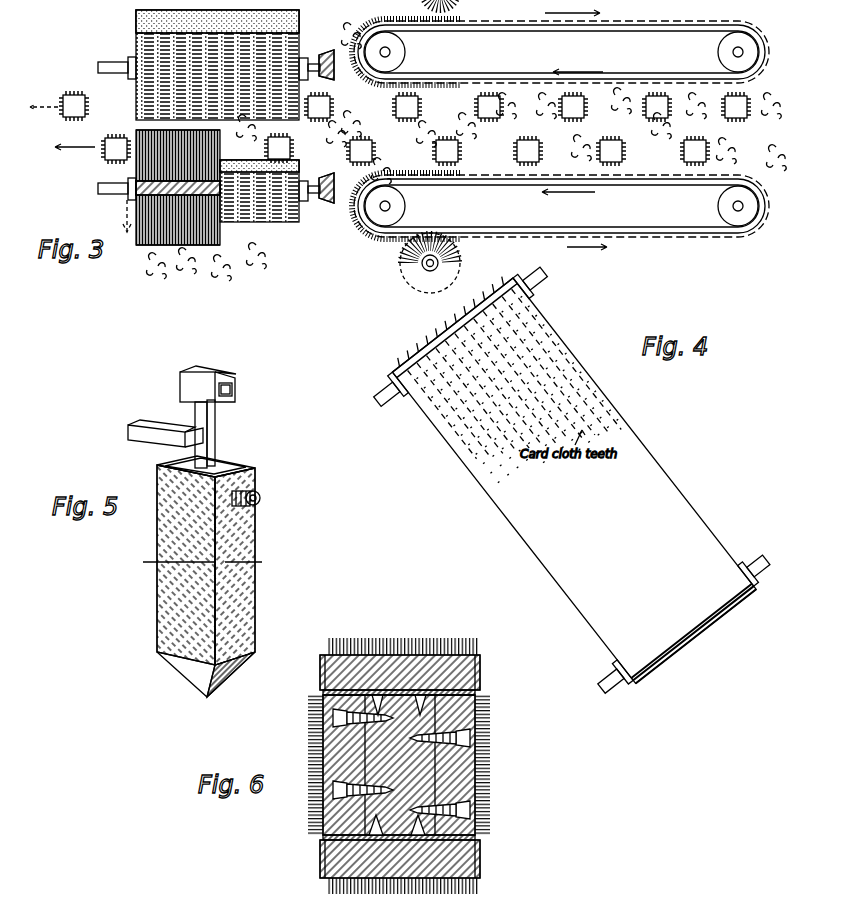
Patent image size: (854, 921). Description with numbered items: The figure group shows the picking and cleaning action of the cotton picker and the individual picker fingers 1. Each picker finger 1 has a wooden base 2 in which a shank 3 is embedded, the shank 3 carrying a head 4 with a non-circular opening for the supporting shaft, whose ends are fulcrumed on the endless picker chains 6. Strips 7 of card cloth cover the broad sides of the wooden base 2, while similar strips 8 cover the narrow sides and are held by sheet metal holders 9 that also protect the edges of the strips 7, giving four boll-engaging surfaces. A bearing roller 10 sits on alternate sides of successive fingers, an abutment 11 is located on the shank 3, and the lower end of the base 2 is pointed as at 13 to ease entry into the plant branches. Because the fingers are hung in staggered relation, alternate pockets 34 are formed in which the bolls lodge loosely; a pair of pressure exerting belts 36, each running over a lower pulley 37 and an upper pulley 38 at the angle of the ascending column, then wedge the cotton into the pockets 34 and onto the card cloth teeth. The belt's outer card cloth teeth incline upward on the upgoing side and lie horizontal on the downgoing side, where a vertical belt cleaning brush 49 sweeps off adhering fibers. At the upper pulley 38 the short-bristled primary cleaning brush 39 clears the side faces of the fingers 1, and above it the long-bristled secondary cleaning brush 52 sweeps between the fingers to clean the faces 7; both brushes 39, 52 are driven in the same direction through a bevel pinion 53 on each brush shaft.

In FIG. 3, the picker finger 1 is at (84, 115).
In FIG. 5, the picker finger 1 is at (240, 528).
In FIG. 6, the picker finger 1 is at (383, 689).
In FIG. 5, the wooden base 2 is at (224, 466).
In FIG. 6, the wooden base 2 is at (475, 780).
In FIG. 5, the shank 3 is at (216, 432).
In FIG. 5, the head 4 is at (214, 370).
In FIG. 5, the endless picker chains 6 is at (201, 564).
In FIG. 6, the card cloth strips 7 is at (480, 767).
In FIG. 6, the card cloth strips 8 is at (430, 663).
In FIG. 6, the sheet metal holders 9 is at (478, 668).
In FIG. 5, the bearing roller 10 is at (259, 497).
In FIG. 5, the abutment 11 is at (165, 424).
In FIG. 5, the pointed lower end 13 is at (203, 693).
In FIG. 3, the pocket 34 is at (520, 88).
In FIG. 3, the pressure exerting belts 36 is at (450, 80).
In FIG. 3, the lower pulley 37 is at (720, 55).
In FIG. 3, the upper pulley 38 is at (395, 62).
In FIG. 3, the primary cleaning brush 39 is at (276, 46).
In FIG. 3, the belt cleaning brush 49 is at (425, 271).
In FIG. 3, the secondary cleaning brush 52 is at (137, 45).
In FIG. 3, the bevel pinion 53 is at (333, 130).